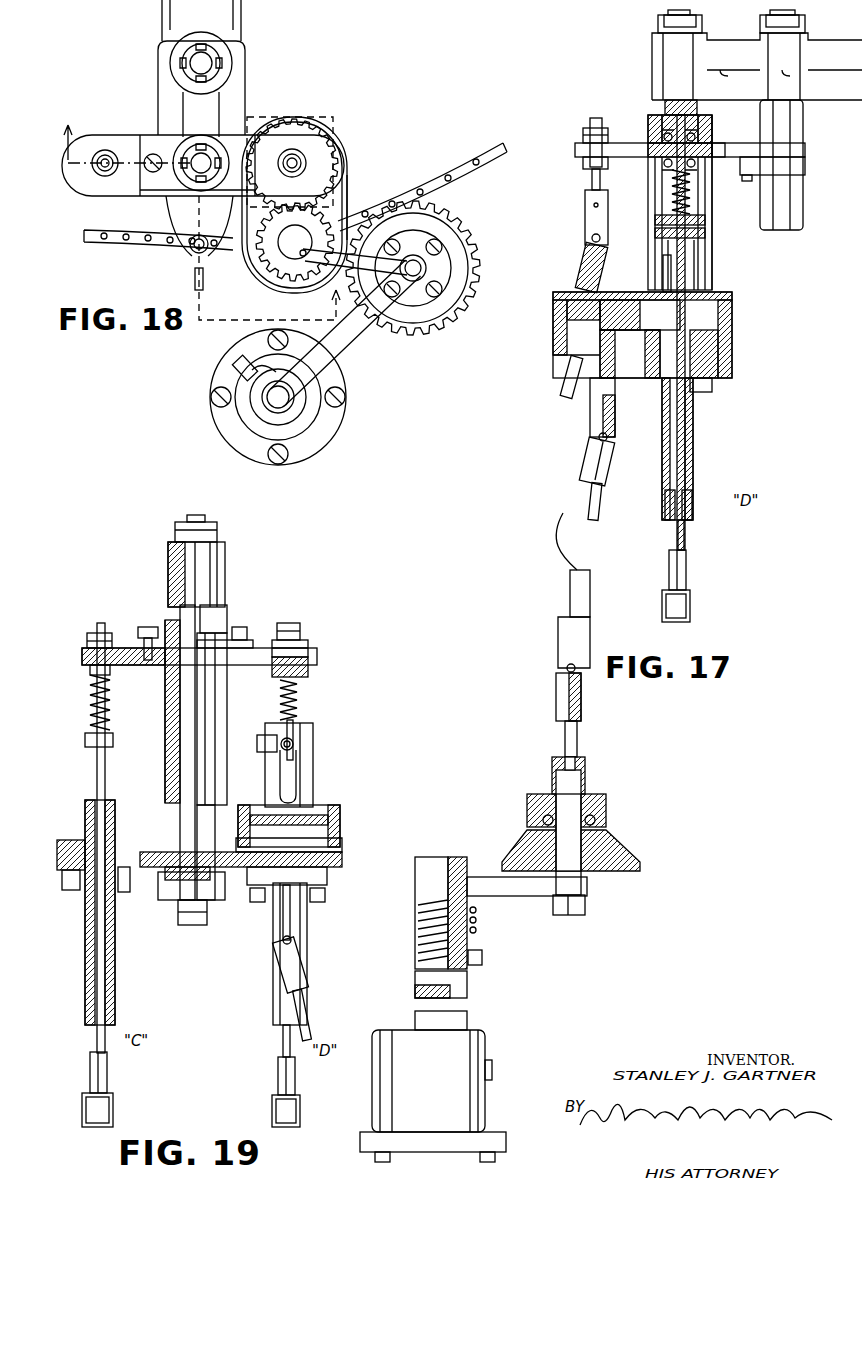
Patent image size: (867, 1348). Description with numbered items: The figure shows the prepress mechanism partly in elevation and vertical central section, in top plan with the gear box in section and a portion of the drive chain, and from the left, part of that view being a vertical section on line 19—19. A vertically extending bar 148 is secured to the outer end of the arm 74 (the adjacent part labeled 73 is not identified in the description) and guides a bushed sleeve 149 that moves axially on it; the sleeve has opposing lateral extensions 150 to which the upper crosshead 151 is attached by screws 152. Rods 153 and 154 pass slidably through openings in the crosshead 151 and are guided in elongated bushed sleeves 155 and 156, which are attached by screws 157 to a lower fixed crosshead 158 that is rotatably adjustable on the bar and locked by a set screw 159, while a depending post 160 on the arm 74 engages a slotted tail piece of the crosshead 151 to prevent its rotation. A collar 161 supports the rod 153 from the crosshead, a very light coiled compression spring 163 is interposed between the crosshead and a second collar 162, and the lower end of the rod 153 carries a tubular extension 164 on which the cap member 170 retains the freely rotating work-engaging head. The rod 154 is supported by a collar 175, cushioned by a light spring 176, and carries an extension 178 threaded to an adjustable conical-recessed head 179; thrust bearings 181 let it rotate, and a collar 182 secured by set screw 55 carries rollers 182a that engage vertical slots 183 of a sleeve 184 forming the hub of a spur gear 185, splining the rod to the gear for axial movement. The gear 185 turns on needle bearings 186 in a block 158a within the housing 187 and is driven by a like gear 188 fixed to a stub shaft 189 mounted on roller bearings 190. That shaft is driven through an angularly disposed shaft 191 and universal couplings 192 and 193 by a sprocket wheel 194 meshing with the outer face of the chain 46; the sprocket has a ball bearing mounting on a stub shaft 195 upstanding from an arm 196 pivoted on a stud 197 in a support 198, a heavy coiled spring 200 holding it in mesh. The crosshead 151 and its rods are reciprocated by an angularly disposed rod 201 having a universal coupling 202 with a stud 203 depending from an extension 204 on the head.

In FIG. 18, the section line 19 is at (199, 215).
In FIG. 18, the chain 46 is at (468, 153).
In FIG. 19, the set screw 55 is at (258, 740).
In FIG. 18, the bracket 73 is at (268, 73).
In FIG. 17, the bracket 73 is at (730, 275).
In FIG. 19, the bracket 73 is at (260, 585).
In FIG. 18, the arm 74 is at (241, 18).
In FIG. 17, the arm 74 is at (652, 55).
In FIG. 19, the arm 74 is at (225, 568).
In FIG. 18, the bar 148 is at (215, 148).
In FIG. 17, the bar 148 is at (672, 106).
In FIG. 19, the bar 148 is at (222, 620).
In FIG. 17, the bushed sleeve 149 is at (712, 125).
In FIG. 19, the bushed sleeve 149 is at (227, 712).
In FIG. 18, the lateral extensions 150 is at (163, 190).
In FIG. 17, the lateral extensions 150 is at (714, 148).
In FIG. 19, the lateral extensions 150 is at (262, 636).
In FIG. 18, the upper crosshead 151 is at (141, 136).
In FIG. 17, the upper crosshead 151 is at (650, 155).
In FIG. 19, the upper crosshead 151 is at (127, 648).
In FIG. 18, the screws 152 is at (153, 153).
In FIG. 19, the screws 152 is at (147, 627).
In FIG. 18, the rod 153 is at (98, 176).
In FIG. 19, the rod 153 is at (105, 778).
In FIG. 18, the rod 154 is at (333, 150).
In FIG. 17, the rod 154 is at (684, 535).
In FIG. 19, the rod 154 is at (283, 1040).
In FIG. 19, the elongated bushed sleeve 155 is at (85, 938).
In FIG. 17, the elongated bushed sleeve 156 is at (693, 470).
In FIG. 19, the elongated bushed sleeve 156 is at (273, 990).
In FIG. 19, the screws 157 is at (122, 893).
In FIG. 18, the lower fixed crosshead 158 is at (96, 130).
In FIG. 17, the lower fixed crosshead 158 is at (718, 360).
In FIG. 19, the lower fixed crosshead 158 is at (175, 858).
In FIG. 18, the block 158a is at (347, 188).
In FIG. 17, the block 158a is at (712, 385).
In FIG. 19, the block 158a is at (268, 890).
In FIG. 19, the set screw 159 is at (178, 900).
In FIG. 17, the depending post 160 is at (790, 128).
In FIG. 18, the collar 161 is at (108, 172).
In FIG. 19, the collar 161 is at (87, 636).
In FIG. 19, the second collar 162 is at (85, 740).
In FIG. 19, the coiled compression spring 163 is at (90, 700).
In FIG. 19, the tubular extension 164 is at (90, 1068).
In FIG. 19, the cap member 170 is at (82, 1112).
In FIG. 18, the collar 175 is at (300, 120).
In FIG. 17, the collar 175 is at (665, 122).
In FIG. 19, the collar 175 is at (300, 630).
In FIG. 17, the coiled compression spring 176 is at (690, 182).
In FIG. 19, the coiled compression spring 176 is at (299, 690).
In FIG. 17, the extension 178 is at (686, 575).
In FIG. 19, the extension 178 is at (278, 1078).
In FIG. 17, the adjustable head 179 is at (690, 605).
In FIG. 19, the adjustable head 179 is at (272, 1110).
In FIG. 18, the thrust bearing 181 is at (291, 149).
In FIG. 17, the thrust bearing 181 is at (664, 135).
In FIG. 19, the thrust bearing 181 is at (308, 650).
In FIG. 17, the collar 182 is at (705, 235).
In FIG. 17, the rollers 182a is at (705, 220).
In FIG. 19, the rollers 182a is at (296, 730).
In FIG. 17, the vertical slots 183 is at (705, 265).
In FIG. 19, the vertical slots 183 is at (300, 770).
In FIG. 17, the sleeve 184 is at (725, 296).
In FIG. 19, the sleeve 184 is at (313, 780).
In FIG. 18, the spur gear 185 is at (335, 135).
In FIG. 17, the spur gear 185 is at (732, 310).
In FIG. 17, the needle bearings 186 is at (663, 278).
In FIG. 18, the housing 187 is at (343, 165).
In FIG. 17, the housing 187 is at (567, 308).
In FIG. 19, the housing 187 is at (340, 806).
In FIG. 18, the gear 188 is at (262, 272).
In FIG. 17, the gear 188 is at (600, 318).
In FIG. 19, the gear 188 is at (328, 820).
In FIG. 18, the stub shaft 189 is at (283, 250).
In FIG. 17, the stub shaft 189 is at (600, 332).
In FIG. 19, the stub shaft 189 is at (292, 925).
In FIG. 17, the roller bearings 190 is at (585, 395).
In FIG. 18, the angularly disposed shaft 191 is at (404, 283).
In FIG. 17, the angularly disposed shaft 191 is at (590, 505).
In FIG. 19, the angularly disposed shaft 191 is at (308, 1010).
In FIG. 17, the universal coupling 192 is at (590, 462).
In FIG. 19, the universal coupling 192 is at (305, 960).
In FIG. 18, the universal coupling 193 is at (405, 260).
In FIG. 17, the universal coupling 193 is at (556, 692).
In FIG. 18, the sprocket wheel 194 is at (390, 330).
In FIG. 17, the sprocket wheel 194 is at (615, 868).
In FIG. 17, the stub shaft 195 is at (583, 880).
In FIG. 18, the arm 196 is at (352, 355).
In FIG. 17, the arm 196 is at (540, 896).
In FIG. 18, the stud 197 is at (300, 404).
In FIG. 17, the stud 197 is at (467, 985).
In FIG. 18, the support 198 is at (322, 433).
In FIG. 17, the support 198 is at (485, 1058).
In FIG. 18, the coiled spring 200 is at (318, 352).
In FIG. 17, the coiled spring 200 is at (482, 925).
In FIG. 18, the angularly disposed rod 201 is at (194, 285).
In FIG. 17, the angularly disposed rod 201 is at (565, 370).
In FIG. 17, the universal coupling 202 is at (585, 237).
In FIG. 18, the stud 203 is at (196, 254).
In FIG. 17, the stud 203 is at (592, 176).
In FIG. 18, the extension 204 is at (193, 250).
In FIG. 17, the extension 204 is at (586, 135).